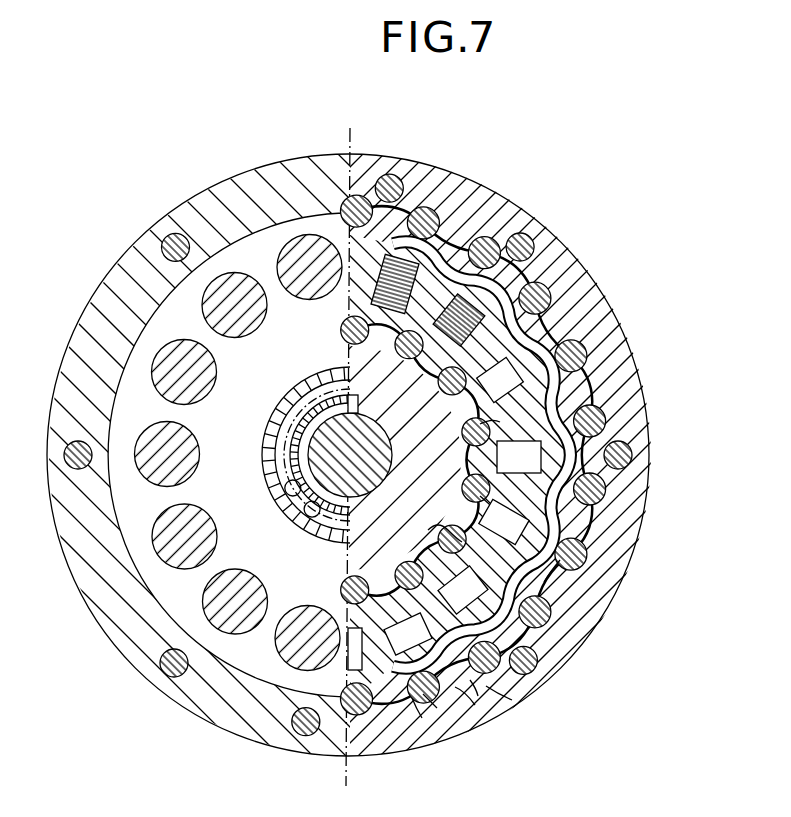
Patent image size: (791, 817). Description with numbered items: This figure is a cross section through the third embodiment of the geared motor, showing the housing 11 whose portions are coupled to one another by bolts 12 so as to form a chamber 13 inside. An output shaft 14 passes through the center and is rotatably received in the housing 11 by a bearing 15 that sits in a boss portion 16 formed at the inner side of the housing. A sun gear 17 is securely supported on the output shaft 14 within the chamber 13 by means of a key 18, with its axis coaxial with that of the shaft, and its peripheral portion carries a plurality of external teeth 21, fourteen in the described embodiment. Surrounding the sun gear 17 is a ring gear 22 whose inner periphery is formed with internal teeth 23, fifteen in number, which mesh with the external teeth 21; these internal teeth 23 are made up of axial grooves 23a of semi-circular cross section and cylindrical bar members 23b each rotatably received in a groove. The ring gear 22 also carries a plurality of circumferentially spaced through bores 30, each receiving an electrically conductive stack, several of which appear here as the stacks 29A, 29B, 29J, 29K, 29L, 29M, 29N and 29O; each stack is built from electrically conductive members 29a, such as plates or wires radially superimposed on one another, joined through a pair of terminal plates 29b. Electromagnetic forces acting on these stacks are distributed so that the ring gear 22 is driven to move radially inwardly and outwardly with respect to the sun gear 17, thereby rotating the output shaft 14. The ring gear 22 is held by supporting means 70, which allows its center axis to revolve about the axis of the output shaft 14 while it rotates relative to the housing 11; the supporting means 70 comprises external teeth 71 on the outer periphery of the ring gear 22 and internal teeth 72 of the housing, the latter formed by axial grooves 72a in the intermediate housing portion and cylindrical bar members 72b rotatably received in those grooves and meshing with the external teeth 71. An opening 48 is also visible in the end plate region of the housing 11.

The housing 11 is at (275, 172).
The bolts 12 is at (390, 174).
The chamber 13 is at (266, 386).
The output shaft 14 is at (310, 450).
The bearing 15 is at (324, 522).
The boss portion 16 is at (280, 505).
The sun gear 17 is at (422, 405).
The key 18 is at (358, 396).
The external teeth 21 is at (428, 530).
The ring gear 22 is at (546, 580).
The internal teeth 23 is at (458, 441).
The axial grooves 23a is at (470, 480).
The cylindrical bar members 23b is at (464, 507).
The electrically conductive stack 29A is at (514, 275).
The electrically conductive stack 29B is at (425, 206).
The electrically conductive stack 29J is at (352, 672).
The electrically conductive stack 29K is at (408, 634).
The electrically conductive stack 29L is at (463, 590).
The coil 29M is at (504, 521).
The coil 29N is at (519, 457).
The coil 29O is at (500, 379).
The electrically conductive members 29a is at (440, 237).
The terminal plates 29b is at (358, 245).
The through bores 30 is at (470, 322).
The end plate hole 48 is at (311, 300).
The supporting means 70 is at (422, 718).
The external teeth 71 is at (470, 681).
The internal teeth 72 is at (476, 705).
The axial grooves 72a is at (512, 700).
The cylindrical bar members 72b is at (437, 708).